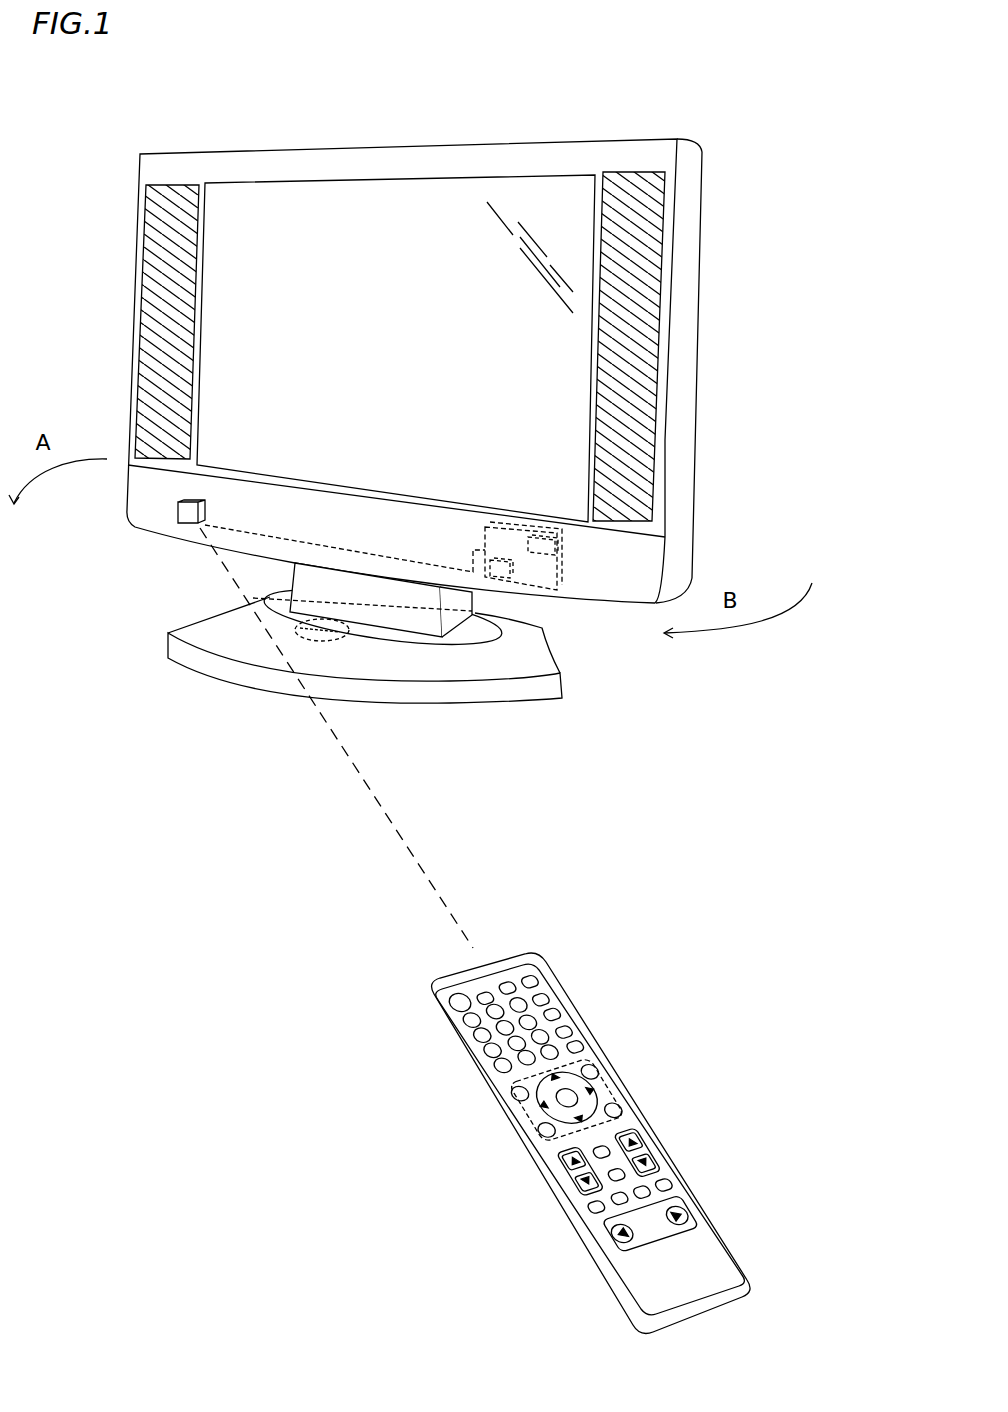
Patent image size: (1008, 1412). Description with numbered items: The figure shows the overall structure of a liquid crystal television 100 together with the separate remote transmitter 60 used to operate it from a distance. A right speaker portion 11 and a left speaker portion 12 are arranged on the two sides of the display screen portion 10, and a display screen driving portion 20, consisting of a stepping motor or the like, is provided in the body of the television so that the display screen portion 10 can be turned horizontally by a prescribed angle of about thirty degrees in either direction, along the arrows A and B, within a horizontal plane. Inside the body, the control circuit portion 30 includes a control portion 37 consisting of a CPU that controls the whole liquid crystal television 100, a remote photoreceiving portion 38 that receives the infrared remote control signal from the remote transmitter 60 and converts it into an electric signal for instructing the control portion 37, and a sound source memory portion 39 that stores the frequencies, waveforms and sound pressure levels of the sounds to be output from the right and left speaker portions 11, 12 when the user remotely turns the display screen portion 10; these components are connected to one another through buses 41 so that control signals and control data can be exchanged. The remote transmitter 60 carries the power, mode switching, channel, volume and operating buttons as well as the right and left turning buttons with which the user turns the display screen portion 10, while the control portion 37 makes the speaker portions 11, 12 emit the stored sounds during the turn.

The liquid crystal television 100 is at (88, 133).
The display screen portion 10 is at (518, 195).
The right speaker portion 11 is at (172, 195).
The left speaker portion 12 is at (632, 175).
The display screen driving portion 20 is at (323, 641).
The control circuit portion 30 is at (537, 575).
The control portion 37 is at (560, 578).
The remote photoreceiving portion 38 is at (183, 522).
The sound source memory portion 39 is at (502, 580).
The buses 41 is at (258, 530).
The remote transmitter 60 is at (615, 915).